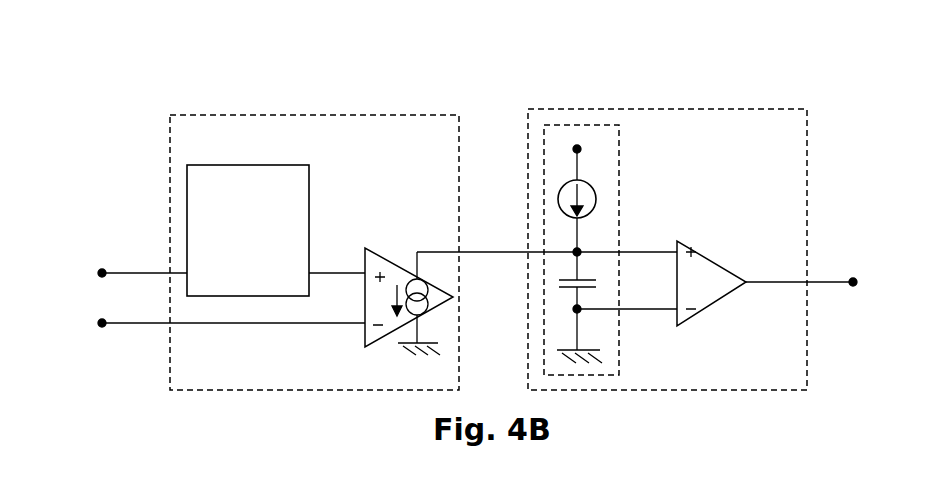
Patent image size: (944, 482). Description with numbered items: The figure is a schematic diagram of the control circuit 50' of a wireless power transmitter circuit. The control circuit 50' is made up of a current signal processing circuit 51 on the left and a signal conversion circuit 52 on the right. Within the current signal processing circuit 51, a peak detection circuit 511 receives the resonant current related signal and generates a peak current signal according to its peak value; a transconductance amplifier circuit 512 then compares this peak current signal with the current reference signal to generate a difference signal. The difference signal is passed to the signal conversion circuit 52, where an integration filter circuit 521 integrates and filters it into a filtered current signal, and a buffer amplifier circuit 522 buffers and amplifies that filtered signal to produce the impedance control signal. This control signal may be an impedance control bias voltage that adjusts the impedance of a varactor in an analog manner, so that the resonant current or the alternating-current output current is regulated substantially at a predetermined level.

The control circuit 50' is at (458, 202).
The current signal processing circuit 51 is at (392, 115).
The peak detection circuit 511 is at (248, 230).
The transconductance amplifier circuit 512 is at (378, 245).
The signal conversion circuit 52 is at (765, 110).
The integration filter circuit 521 is at (572, 125).
The buffer amplifier circuit 522 is at (738, 275).